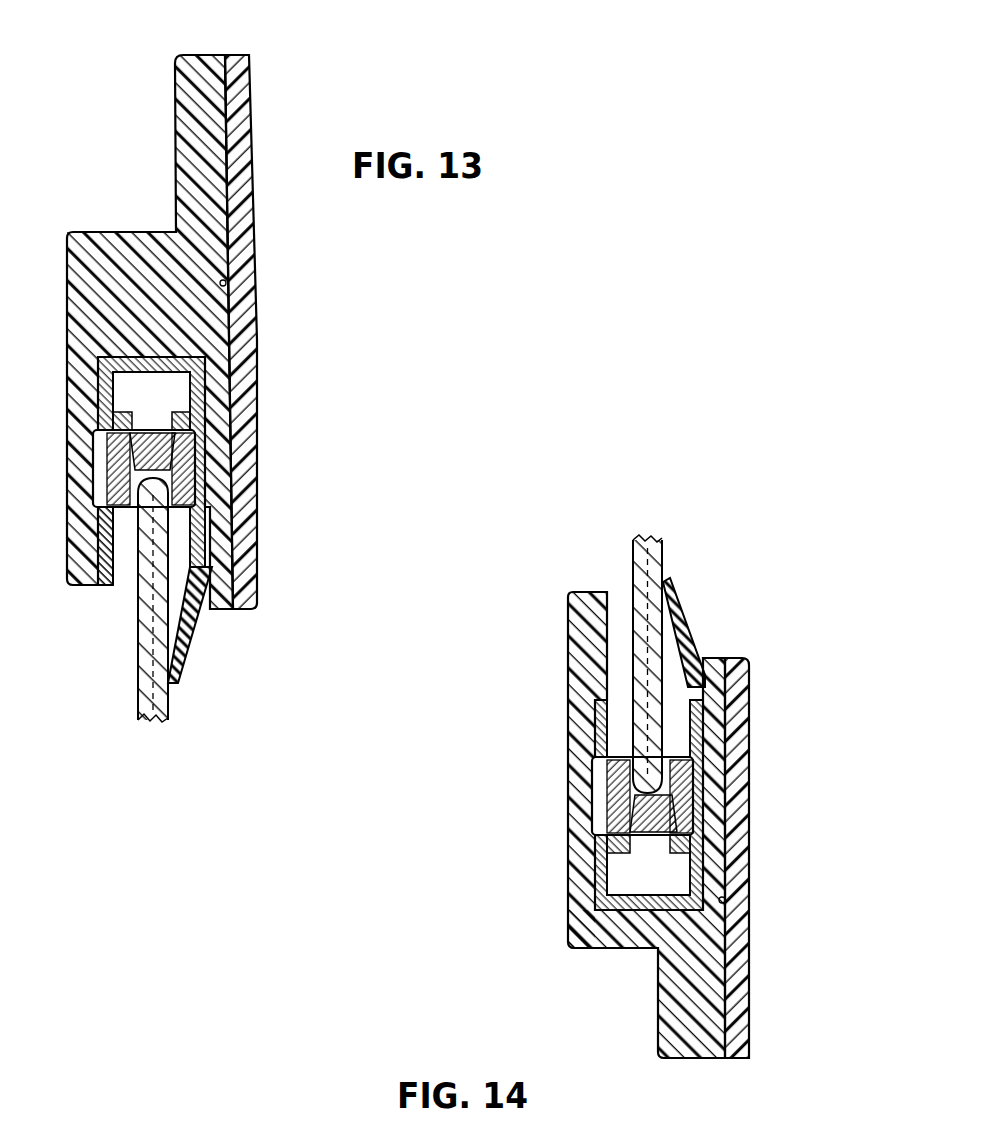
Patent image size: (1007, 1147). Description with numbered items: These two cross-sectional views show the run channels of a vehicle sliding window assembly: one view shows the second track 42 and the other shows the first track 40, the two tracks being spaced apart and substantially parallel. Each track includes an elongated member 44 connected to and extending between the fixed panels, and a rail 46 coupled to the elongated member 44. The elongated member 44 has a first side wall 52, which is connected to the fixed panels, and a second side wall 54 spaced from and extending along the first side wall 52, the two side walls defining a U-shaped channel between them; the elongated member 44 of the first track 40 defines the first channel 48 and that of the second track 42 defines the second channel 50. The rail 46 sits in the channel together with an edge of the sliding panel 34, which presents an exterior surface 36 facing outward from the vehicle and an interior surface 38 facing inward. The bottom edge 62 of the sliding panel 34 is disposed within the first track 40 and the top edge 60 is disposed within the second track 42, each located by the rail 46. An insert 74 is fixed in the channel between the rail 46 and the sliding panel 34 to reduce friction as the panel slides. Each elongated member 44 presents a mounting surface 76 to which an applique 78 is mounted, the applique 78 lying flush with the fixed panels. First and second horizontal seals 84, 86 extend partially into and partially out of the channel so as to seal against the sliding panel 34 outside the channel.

In FIG. 13, the sliding panel 34 is at (153, 712).
In FIG. 14, the sliding panel 34 is at (650, 540).
In FIG. 13, the exterior surface 36 is at (168, 707).
In FIG. 14, the exterior surface 36 is at (662, 555).
In FIG. 13, the interior surface 38 is at (138, 695).
In FIG. 14, the interior surface 38 is at (618, 595).
In FIG. 14, the first track 40 is at (572, 927).
In FIG. 13, the second track 42 is at (72, 265).
In FIG. 13, the elongated member 44 is at (130, 250).
In FIG. 14, the elongated member 44 is at (670, 970).
In FIG. 13, the rail 46 is at (100, 360).
In FIG. 14, the rail 46 is at (607, 892).
In FIG. 14, the first channel 48 is at (630, 553).
In FIG. 13, the second channel 50 is at (128, 572).
In FIG. 13, the first side wall 52 is at (220, 442).
In FIG. 14, the first side wall 52 is at (713, 807).
In FIG. 13, the second side wall 54 is at (75, 455).
In FIG. 14, the second side wall 54 is at (573, 647).
In FIG. 13, the top edge 60 is at (147, 508).
In FIG. 14, the bottom edge 62 is at (640, 743).
In FIG. 13, the insert 74 is at (110, 437).
In FIG. 14, the insert 74 is at (677, 828).
In FIG. 13, the mounting surface 76 is at (222, 283).
In FIG. 14, the mounting surface 76 is at (722, 903).
In FIG. 13, the applique 78 is at (257, 347).
In FIG. 14, the applique 78 is at (743, 700).
In FIG. 14, the first horizontal seal 84 is at (690, 632).
In FIG. 13, the second horizontal seal 86 is at (183, 653).